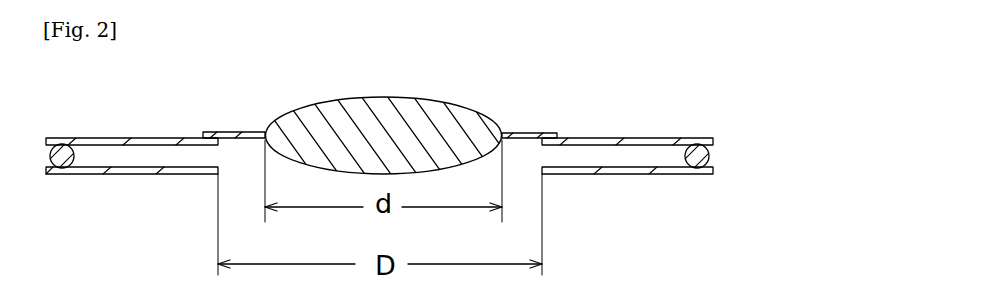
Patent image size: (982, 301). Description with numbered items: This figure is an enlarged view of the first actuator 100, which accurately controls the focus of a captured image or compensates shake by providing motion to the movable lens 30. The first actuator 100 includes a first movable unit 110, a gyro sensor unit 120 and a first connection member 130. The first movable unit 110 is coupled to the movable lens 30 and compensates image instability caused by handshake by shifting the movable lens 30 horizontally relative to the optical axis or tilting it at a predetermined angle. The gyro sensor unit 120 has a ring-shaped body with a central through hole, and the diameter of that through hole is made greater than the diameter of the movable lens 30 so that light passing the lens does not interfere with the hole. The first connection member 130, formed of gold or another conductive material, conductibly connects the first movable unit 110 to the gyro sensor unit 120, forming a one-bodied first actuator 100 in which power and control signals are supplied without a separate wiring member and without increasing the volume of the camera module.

The movable lens 30 is at (438, 98).
The first actuator 100 is at (449, 148).
The first movable unit 110 is at (700, 138).
The gyro sensor unit 120 is at (702, 175).
The first connection member 130 is at (708, 153).